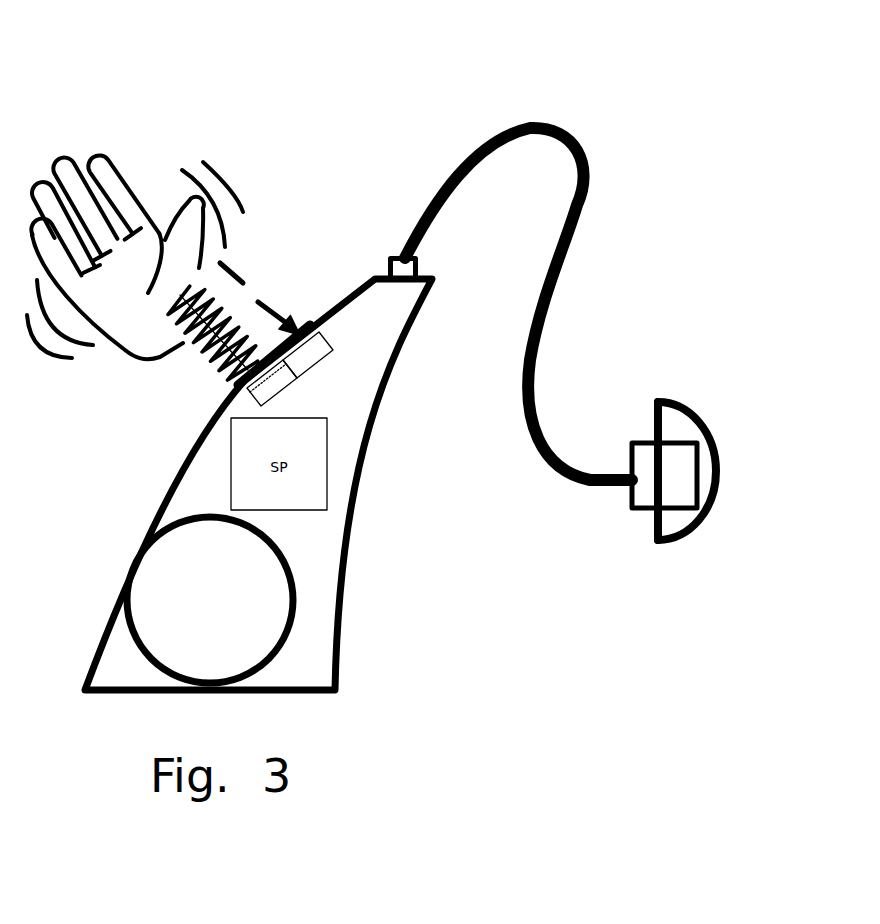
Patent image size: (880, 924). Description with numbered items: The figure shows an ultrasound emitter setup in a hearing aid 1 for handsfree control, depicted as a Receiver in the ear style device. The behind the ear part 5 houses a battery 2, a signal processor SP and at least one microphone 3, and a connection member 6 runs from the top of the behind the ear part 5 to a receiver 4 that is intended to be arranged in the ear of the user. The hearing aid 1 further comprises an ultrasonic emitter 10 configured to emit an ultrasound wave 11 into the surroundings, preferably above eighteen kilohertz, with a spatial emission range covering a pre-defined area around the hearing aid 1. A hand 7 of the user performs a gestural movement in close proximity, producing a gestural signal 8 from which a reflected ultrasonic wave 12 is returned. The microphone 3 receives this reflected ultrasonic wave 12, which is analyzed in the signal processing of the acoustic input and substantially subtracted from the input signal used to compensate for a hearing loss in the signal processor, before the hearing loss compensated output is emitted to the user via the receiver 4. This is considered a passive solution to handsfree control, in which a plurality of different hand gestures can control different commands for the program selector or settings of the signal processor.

The hearing aid 1 is at (592, 265).
The battery 2 is at (267, 630).
The microphone 3 is at (315, 343).
The receiver 4 is at (683, 467).
The behind the ear part 5 is at (159, 492).
The connection member 6 is at (542, 122).
The hand 7 is at (117, 167).
The gestural signal 8 is at (227, 180).
The ultrasonic emitter 10 is at (280, 381).
The ultrasound wave 11 is at (194, 340).
The reflected ultrasonic wave 12 is at (233, 270).